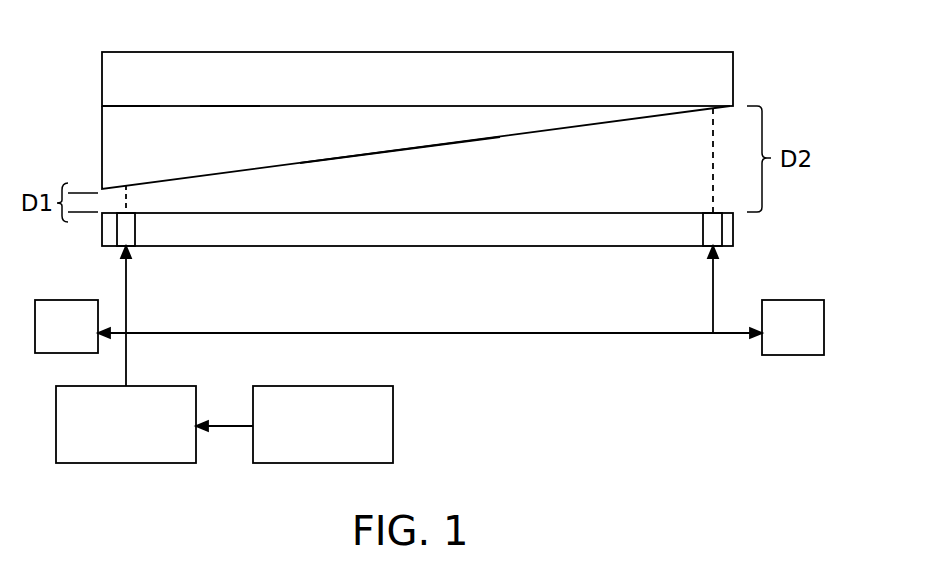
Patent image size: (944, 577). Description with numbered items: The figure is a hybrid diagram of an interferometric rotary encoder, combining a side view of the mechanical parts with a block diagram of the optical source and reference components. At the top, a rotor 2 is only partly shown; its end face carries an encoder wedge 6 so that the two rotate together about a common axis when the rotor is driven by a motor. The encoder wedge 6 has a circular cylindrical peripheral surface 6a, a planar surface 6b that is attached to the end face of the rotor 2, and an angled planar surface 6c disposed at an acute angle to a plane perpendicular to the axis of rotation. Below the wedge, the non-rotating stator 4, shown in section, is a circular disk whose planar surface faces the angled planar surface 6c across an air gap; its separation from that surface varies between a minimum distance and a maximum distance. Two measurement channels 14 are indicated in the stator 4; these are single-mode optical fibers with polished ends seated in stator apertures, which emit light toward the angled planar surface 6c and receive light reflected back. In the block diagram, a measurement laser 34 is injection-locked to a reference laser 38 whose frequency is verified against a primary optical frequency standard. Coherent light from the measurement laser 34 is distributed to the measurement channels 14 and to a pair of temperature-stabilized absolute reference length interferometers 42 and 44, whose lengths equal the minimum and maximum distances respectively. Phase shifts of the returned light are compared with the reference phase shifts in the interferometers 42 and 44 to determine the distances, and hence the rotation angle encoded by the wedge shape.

The rotor 2 is at (557, 52).
The stator 4 is at (590, 212).
The encoder wedge 6 is at (100, 160).
The circular cylindrical peripheral surface 6a is at (160, 120).
The planar surface 6b is at (243, 112).
The angled planar surface 6c is at (418, 147).
The measurement channels 14 is at (114, 230).
The measurement laser 34 is at (161, 386).
The reference laser 38 is at (395, 417).
The absolute reference length interferometer 42 is at (68, 355).
The absolute reference length interferometer 44 is at (782, 357).